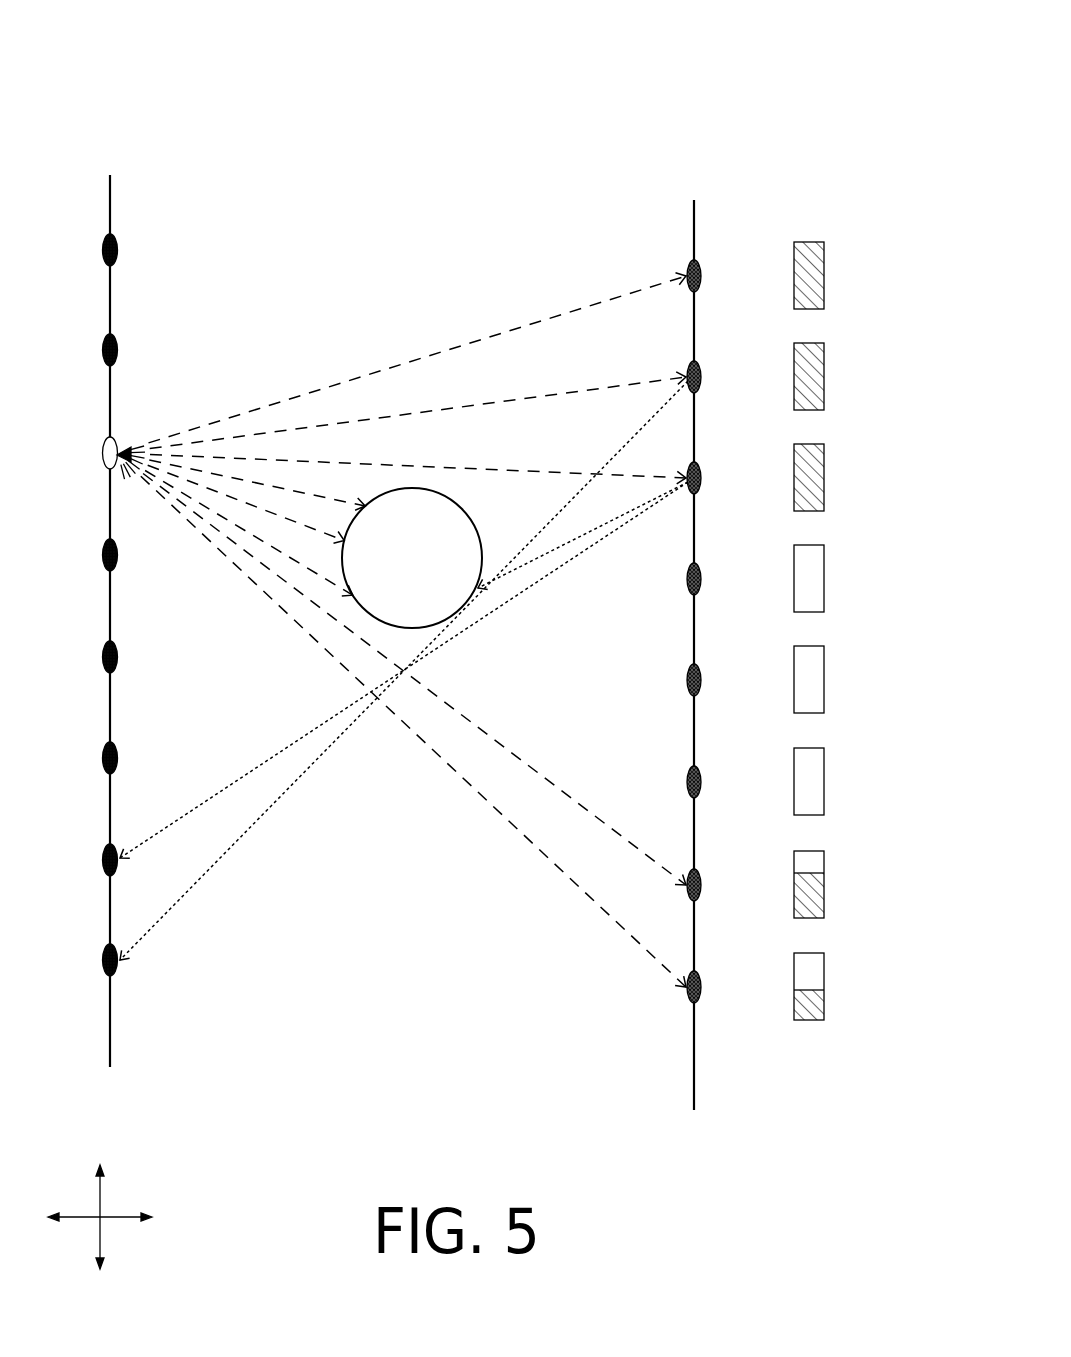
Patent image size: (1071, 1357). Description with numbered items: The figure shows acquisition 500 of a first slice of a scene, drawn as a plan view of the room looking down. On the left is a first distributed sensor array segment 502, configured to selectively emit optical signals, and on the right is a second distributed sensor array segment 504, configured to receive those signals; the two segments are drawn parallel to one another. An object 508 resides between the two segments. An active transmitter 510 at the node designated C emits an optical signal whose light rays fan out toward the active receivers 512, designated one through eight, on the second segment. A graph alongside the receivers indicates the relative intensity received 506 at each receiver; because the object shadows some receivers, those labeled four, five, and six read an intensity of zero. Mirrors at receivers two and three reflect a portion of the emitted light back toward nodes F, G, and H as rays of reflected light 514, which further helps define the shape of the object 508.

The acquisition 500 is at (753, 28).
The first distributed sensor array segment 502 is at (111, 190).
The second distributed sensor array segment 504 is at (694, 235).
The relative intensity received 506 is at (789, 140).
The object 508 is at (412, 558).
The active transmitter 510 is at (116, 438).
The active receivers 512 is at (690, 1003).
The reflected light 514 is at (215, 855).